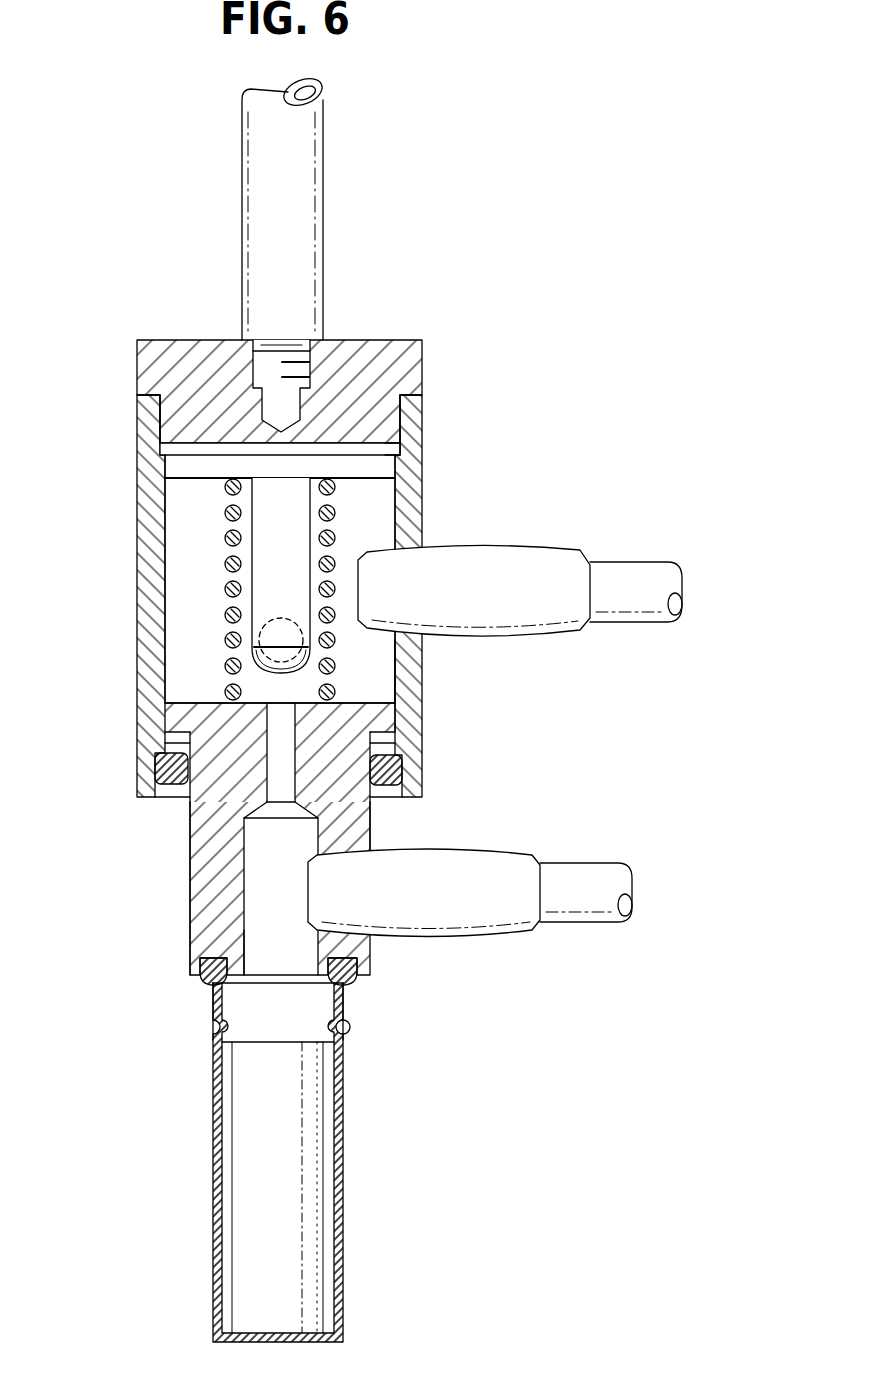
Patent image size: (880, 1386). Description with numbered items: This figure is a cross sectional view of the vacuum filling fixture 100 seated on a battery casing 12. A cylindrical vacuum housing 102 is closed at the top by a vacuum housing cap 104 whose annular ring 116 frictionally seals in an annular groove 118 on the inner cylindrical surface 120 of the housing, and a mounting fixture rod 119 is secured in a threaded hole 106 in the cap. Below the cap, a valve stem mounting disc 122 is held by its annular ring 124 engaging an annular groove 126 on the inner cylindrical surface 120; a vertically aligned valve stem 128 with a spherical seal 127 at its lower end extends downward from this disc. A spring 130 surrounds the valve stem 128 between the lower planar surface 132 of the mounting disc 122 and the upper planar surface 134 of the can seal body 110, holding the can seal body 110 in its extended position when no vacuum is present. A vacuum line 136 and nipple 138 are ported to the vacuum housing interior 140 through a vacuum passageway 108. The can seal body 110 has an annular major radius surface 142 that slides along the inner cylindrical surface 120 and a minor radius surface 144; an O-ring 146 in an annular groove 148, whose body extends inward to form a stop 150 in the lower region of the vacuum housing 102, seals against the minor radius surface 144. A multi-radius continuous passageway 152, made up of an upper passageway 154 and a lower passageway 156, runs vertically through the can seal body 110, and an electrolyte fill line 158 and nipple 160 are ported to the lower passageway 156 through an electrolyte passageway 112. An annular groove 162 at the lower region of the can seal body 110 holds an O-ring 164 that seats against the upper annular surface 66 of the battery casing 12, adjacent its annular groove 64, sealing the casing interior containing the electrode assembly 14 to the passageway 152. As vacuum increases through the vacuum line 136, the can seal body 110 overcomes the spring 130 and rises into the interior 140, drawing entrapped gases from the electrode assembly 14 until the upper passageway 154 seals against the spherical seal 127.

The plunger assembly 100 is at (508, 310).
The mounting fixture rod 119 is at (316, 207).
The vacuum housing cap 104 is at (150, 358).
The threaded hole 106 is at (263, 353).
The annular ring 116 is at (393, 408).
The annular groove 118 is at (158, 408).
The vacuum housing 102 is at (137, 572).
The vacuum passageway 108 is at (422, 535).
The annular groove 126 is at (160, 452).
The annular ring 124 is at (398, 452).
The valve stem mounting disc 122 is at (392, 467).
The inner cylindrical surface 120 is at (172, 524).
The vacuum housing interior 140 is at (174, 556).
The lower planar surface 132 is at (347, 490).
The upper planar surface 134 is at (367, 700).
The valve stem 128 is at (268, 585).
The spring 130 is at (238, 666).
The spherical seal 127 is at (272, 672).
The annular major radius surface 142 is at (387, 716).
The O-ring 146 is at (402, 760).
The annular groove 148 is at (405, 785).
The stop 150 is at (165, 750).
The can seal body 110 is at (200, 876).
The minor radius surface 144 is at (188, 862).
The electrolyte passageway 112 is at (360, 826).
The upper passageway 154 is at (272, 790).
The multi-radius continuous passageway 152 is at (270, 902).
The lower passageway 156 is at (252, 940).
The annular groove 162 is at (352, 957).
The O-ring 164 is at (350, 985).
The battery casing 12 is at (345, 1140).
The annular groove 64 is at (345, 1030).
The upper annular surface 66 is at (200, 994).
The electrode assembly 14 is at (305, 1200).
The nipple 138 is at (510, 547).
The vacuum line 136 is at (618, 580).
The nipple 160 is at (480, 918).
The electrolyte fill line 158 is at (565, 874).